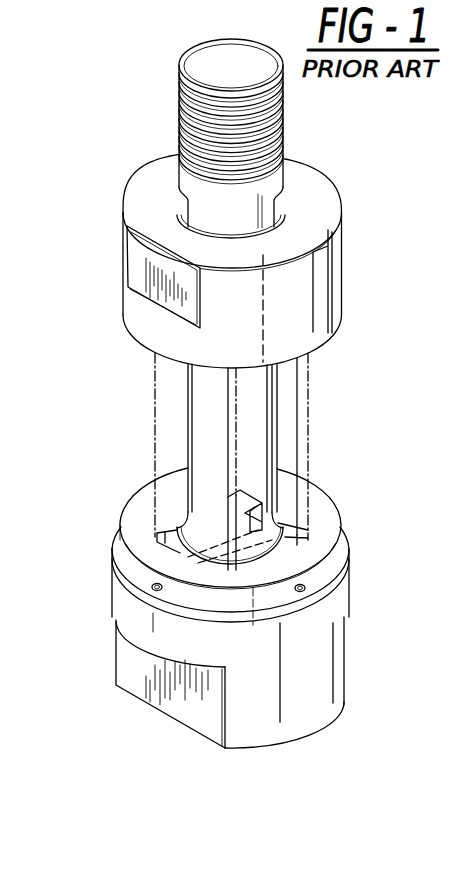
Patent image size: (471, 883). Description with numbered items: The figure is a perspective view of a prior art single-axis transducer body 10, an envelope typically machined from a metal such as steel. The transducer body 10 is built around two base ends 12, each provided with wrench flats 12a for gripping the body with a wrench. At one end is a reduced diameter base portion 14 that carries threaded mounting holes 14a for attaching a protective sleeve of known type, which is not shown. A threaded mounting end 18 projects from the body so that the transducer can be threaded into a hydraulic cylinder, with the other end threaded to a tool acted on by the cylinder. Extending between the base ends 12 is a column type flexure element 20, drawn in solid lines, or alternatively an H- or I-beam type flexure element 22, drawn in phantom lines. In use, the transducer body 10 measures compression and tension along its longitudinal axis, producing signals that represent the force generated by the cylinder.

The single-axis transducer body 10 is at (106, 134).
The base ends 12 is at (315, 293).
The wrench flats 12a is at (300, 186).
The reduced diameter base portion 14 is at (322, 570).
The threaded mounting holes 14a is at (157, 590).
The threaded mounting end 18 is at (178, 95).
The column type flexure element 20 is at (253, 478).
The I-beam type flexure element 22 is at (310, 428).